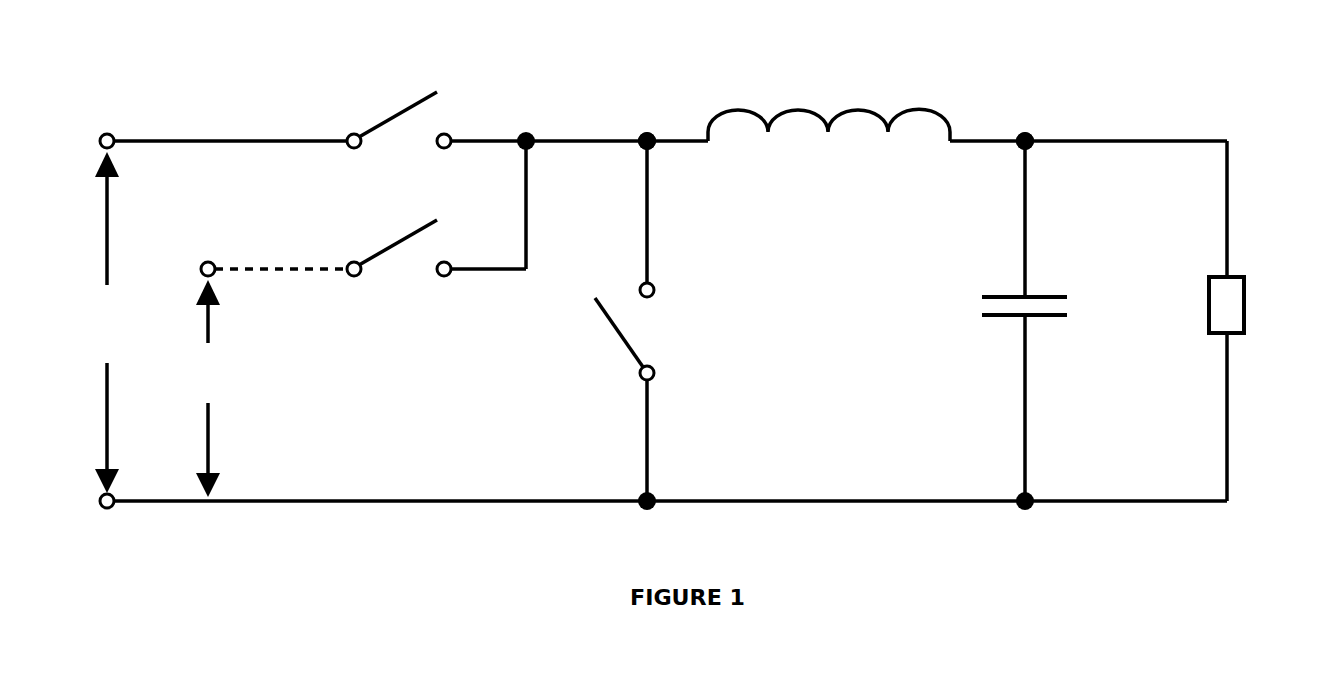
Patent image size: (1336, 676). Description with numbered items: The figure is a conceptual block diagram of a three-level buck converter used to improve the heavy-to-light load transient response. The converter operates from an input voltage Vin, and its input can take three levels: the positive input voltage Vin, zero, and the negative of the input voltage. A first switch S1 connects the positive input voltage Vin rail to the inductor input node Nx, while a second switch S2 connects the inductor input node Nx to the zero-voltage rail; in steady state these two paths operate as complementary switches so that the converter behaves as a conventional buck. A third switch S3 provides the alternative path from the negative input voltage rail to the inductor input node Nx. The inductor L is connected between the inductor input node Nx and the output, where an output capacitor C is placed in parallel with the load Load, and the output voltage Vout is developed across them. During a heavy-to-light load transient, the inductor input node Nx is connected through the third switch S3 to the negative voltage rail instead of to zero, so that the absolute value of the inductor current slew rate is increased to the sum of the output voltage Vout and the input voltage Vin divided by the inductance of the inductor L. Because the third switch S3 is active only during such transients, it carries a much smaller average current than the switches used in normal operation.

The first switch S1 is at (377, 111).
The second switch S2 is at (612, 338).
The third switch S3 is at (326, 240).
The inductor L is at (829, 106).
The output capacitor C is at (1035, 275).
The load Load is at (1269, 283).
The inductor input node Nx is at (672, 162).
The input voltage Vin is at (106, 322).
The output voltage Vout is at (1058, 160).